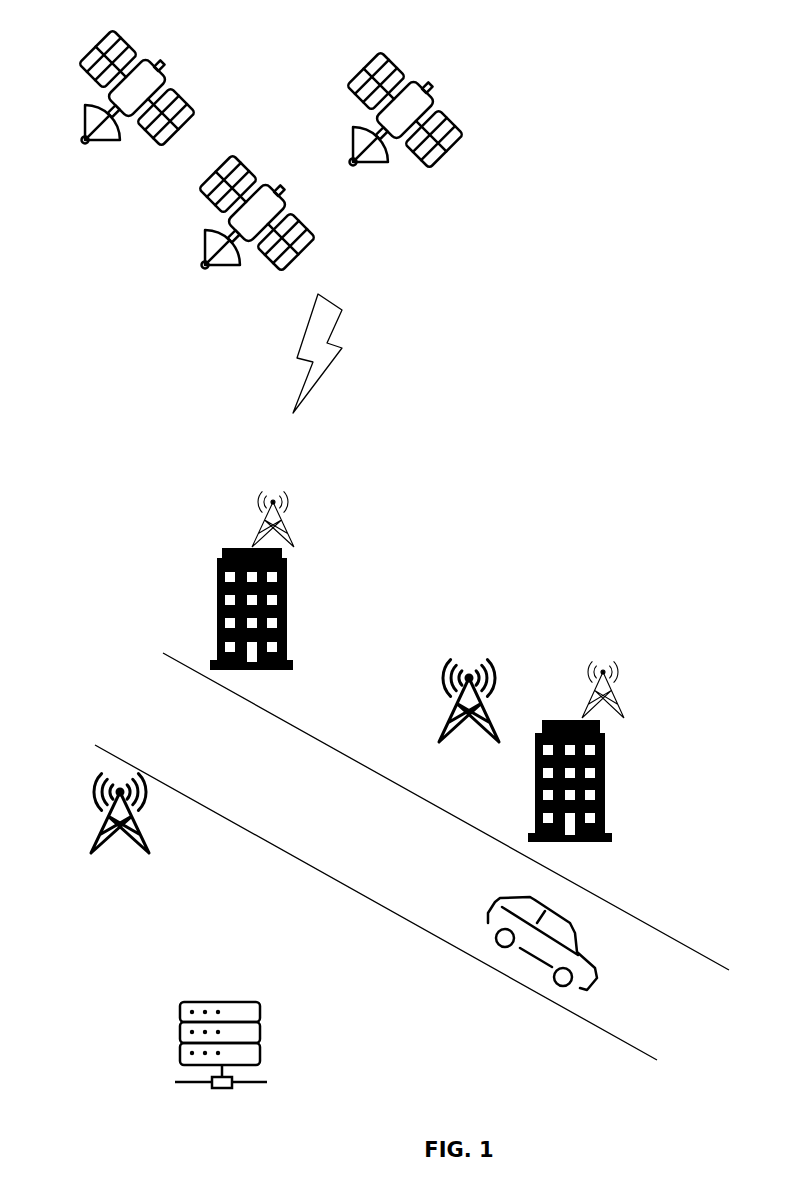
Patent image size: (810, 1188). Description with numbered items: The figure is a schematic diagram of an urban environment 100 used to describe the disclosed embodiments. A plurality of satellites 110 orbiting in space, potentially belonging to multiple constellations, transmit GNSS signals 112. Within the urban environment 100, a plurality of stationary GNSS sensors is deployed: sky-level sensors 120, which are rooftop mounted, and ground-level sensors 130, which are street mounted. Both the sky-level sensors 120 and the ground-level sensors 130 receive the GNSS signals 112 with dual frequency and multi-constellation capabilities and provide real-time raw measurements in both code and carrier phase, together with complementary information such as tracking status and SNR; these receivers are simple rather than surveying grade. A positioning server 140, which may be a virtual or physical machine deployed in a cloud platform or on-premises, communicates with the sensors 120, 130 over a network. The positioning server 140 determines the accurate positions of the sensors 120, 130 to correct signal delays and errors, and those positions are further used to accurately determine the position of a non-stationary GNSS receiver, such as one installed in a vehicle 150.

The urban environment 100 is at (660, 37).
The satellites 110 is at (118, 37).
The GNSS signals 112 is at (340, 313).
The sky-level sensors 120 is at (290, 532).
The ground-level sensors 130 is at (458, 707).
The positioning server 140 is at (182, 1042).
The vehicle 150 is at (585, 977).